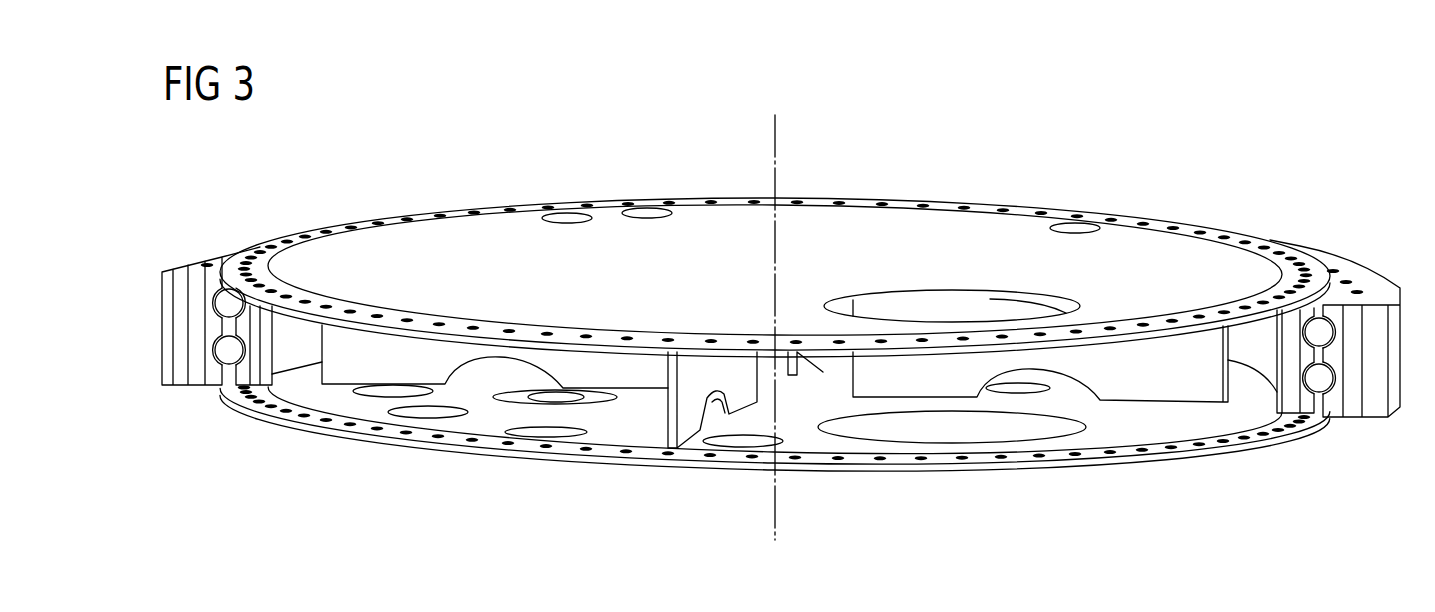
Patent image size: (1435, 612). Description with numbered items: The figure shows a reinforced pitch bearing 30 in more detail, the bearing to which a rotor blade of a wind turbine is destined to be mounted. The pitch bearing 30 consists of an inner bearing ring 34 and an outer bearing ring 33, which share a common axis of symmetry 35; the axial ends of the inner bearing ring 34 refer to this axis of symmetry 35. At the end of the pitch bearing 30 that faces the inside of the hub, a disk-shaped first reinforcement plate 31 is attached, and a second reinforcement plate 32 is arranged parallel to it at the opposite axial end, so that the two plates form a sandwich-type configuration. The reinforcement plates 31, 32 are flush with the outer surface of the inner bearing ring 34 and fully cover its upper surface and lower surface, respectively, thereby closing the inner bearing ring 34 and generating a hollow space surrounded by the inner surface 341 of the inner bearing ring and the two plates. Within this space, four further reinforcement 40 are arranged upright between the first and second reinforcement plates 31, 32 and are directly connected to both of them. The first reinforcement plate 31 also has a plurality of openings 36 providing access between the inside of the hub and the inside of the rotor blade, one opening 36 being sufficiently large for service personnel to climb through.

The pitch bearing 30 is at (556, 136).
The first reinforcement plate 31 is at (1174, 248).
The second reinforcement plate 32 is at (1113, 415).
The outer bearing ring 33 is at (1374, 410).
The inner bearing ring 34 is at (1308, 410).
The inner surface of the inner bearing ring 341 is at (287, 362).
The axis of symmetry 35 is at (773, 132).
The openings 36 is at (939, 312).
The further reinforcement 40 is at (348, 372).